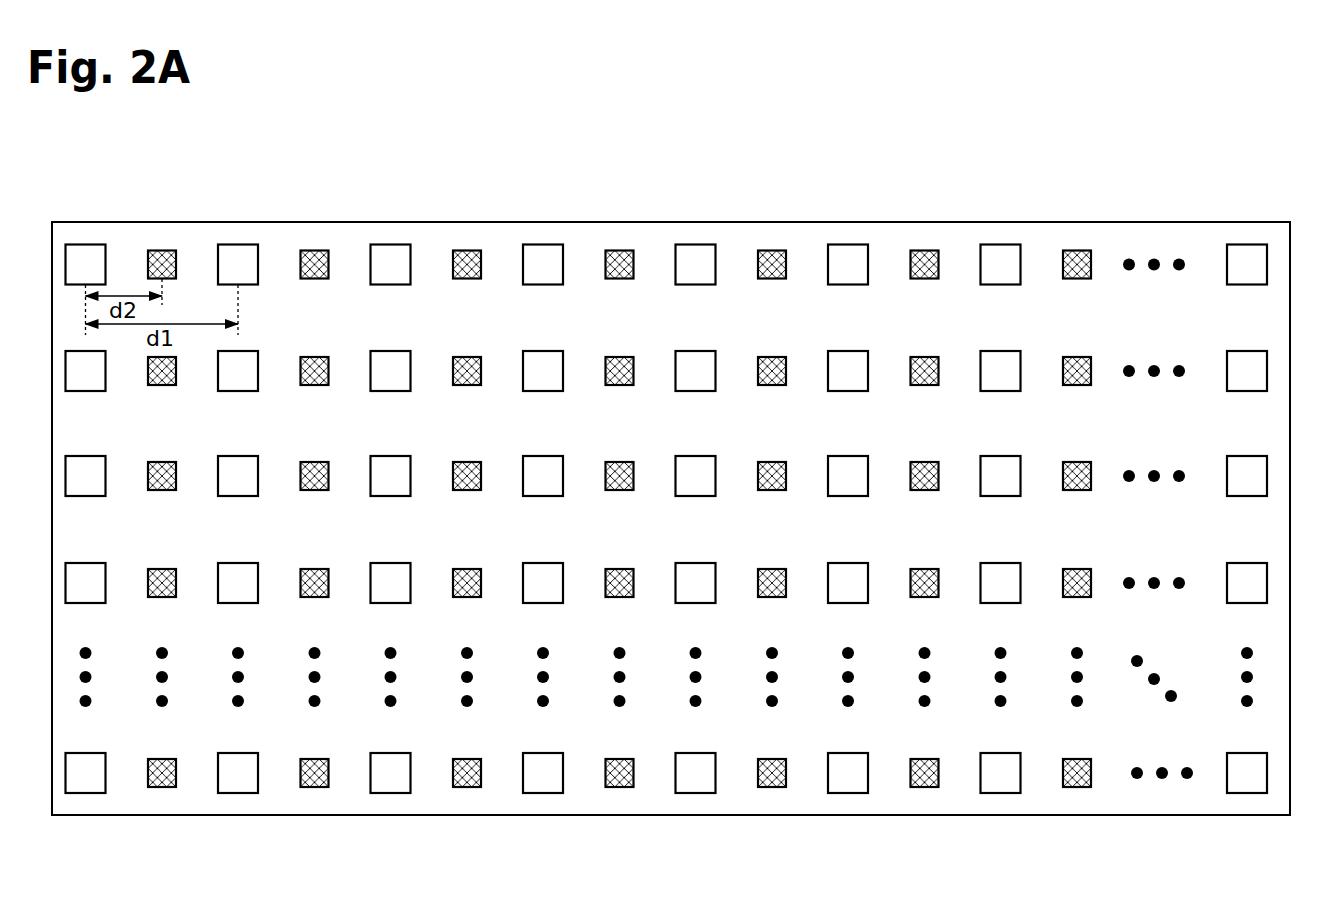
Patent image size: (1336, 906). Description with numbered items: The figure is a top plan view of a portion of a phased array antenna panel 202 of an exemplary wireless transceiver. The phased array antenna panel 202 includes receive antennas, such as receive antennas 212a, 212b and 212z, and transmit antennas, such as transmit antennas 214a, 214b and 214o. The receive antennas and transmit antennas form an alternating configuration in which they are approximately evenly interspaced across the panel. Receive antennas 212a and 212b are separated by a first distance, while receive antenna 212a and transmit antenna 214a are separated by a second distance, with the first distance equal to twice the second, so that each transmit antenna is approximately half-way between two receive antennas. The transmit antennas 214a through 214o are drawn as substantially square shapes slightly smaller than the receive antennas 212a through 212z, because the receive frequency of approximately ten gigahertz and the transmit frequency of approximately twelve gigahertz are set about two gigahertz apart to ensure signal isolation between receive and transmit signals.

The phased array antenna panel 202 is at (1194, 160).
The receive antenna 212a is at (89, 242).
The receive antenna 212b is at (235, 242).
The receive antenna 212z is at (1250, 795).
The transmit antenna 214a is at (162, 248).
The transmit antenna 214b is at (313, 248).
The transmit antenna 214o is at (1079, 790).